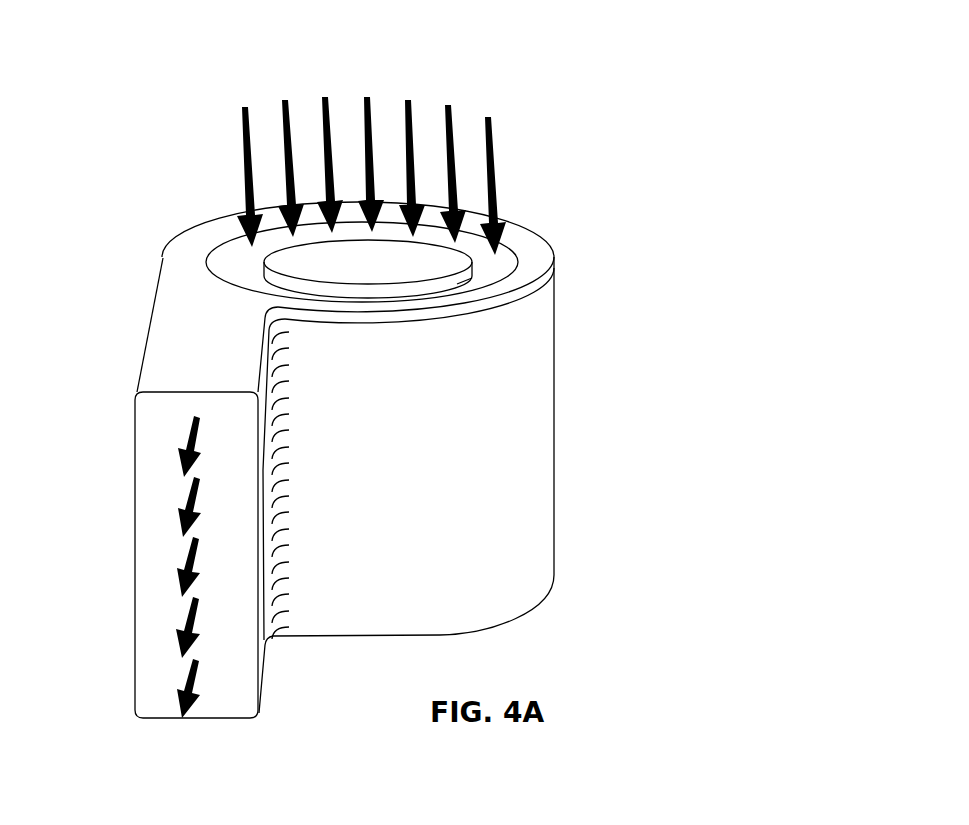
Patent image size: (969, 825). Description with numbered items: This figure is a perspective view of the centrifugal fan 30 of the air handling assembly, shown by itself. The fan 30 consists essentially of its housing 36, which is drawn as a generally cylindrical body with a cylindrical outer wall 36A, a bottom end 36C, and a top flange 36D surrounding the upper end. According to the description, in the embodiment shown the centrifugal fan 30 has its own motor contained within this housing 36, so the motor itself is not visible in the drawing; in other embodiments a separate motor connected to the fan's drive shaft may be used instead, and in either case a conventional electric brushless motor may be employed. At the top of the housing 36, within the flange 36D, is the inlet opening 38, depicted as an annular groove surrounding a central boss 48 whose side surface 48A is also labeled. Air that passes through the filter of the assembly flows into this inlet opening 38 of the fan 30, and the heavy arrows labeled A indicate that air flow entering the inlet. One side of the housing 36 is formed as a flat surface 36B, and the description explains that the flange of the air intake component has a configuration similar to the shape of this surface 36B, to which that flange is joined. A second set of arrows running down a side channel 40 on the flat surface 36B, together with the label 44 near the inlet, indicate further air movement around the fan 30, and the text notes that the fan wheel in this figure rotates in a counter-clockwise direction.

The centrifugal fan 30 is at (632, 238).
The housing 36 is at (482, 535).
The outer cylindrical wall 36A is at (513, 451).
The surface of the fan housing 36B is at (182, 367).
The bottom end 36C is at (405, 640).
The top flange 36D is at (517, 265).
The inlet opening 38 is at (234, 265).
The side flow channel 40 is at (224, 682).
The inlet 44 is at (325, 262).
The central boss 48 is at (430, 279).
The boss side surface 48A is at (457, 284).
The airflow A is at (371, 63).